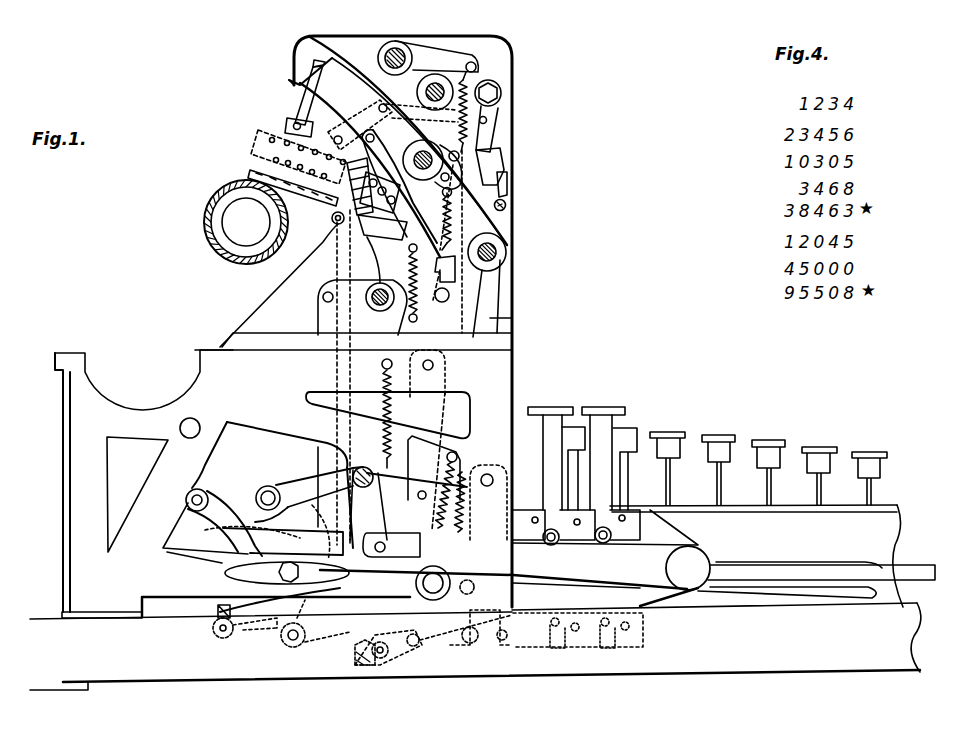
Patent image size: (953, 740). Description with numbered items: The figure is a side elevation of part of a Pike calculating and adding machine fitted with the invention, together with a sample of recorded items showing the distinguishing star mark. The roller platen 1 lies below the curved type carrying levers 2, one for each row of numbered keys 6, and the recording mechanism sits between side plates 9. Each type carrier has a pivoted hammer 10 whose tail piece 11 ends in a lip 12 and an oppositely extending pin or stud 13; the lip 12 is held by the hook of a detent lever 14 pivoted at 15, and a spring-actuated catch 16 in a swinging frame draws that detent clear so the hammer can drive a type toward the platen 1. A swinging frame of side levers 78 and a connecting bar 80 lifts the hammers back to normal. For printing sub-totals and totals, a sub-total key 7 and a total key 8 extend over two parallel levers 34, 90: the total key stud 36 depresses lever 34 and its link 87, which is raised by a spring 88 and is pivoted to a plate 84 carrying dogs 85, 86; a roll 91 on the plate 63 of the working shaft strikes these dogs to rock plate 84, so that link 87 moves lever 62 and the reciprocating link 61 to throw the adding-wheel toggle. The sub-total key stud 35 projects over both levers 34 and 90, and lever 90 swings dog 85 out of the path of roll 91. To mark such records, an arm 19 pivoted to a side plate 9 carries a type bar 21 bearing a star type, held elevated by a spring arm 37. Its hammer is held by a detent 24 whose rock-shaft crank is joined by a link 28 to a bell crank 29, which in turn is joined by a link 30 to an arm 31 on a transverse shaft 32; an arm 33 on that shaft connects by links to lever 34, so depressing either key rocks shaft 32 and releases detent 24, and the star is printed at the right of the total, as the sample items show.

The roller platen 1 is at (205, 230).
The type carrying lever 2 is at (390, 257).
The keys 6 is at (735, 436).
The sub-total key 7 is at (546, 404).
The total key 8 is at (604, 404).
The side plate 9 is at (500, 316).
The hammer 10 is at (294, 62).
The tail piece 11 is at (456, 156).
The lip 12 is at (507, 182).
The pin or stud 13 is at (504, 152).
The detent lever 14 is at (490, 225).
The detent pivot 15 is at (496, 258).
The catch 16 is at (450, 284).
The arm 19 is at (305, 196).
The type bar 21 is at (272, 128).
The detent 24 is at (505, 112).
The link 28 is at (407, 100).
The bell crank 29 is at (350, 127).
The link 30 is at (340, 368).
The arm 31 is at (365, 663).
The transverse shaft 32 is at (381, 660).
The arm 33 is at (420, 655).
The lever 34 is at (437, 589).
The sub-total key stud 35 is at (553, 537).
The total key stud 36 is at (612, 536).
The spring arm 37 is at (250, 178).
The reciprocating link 61 is at (914, 572).
The arm or lever 62 is at (432, 405).
The plate 63 is at (455, 502).
The side lever 78 is at (536, 306).
The connecting bar 80 is at (412, 182).
The plate 84 is at (262, 514).
The dog 85 is at (186, 556).
The dog 86 is at (253, 632).
The link 87 is at (300, 480).
The spring 88 is at (331, 453).
The lever 90 is at (451, 569).
The roll 91 is at (294, 648).